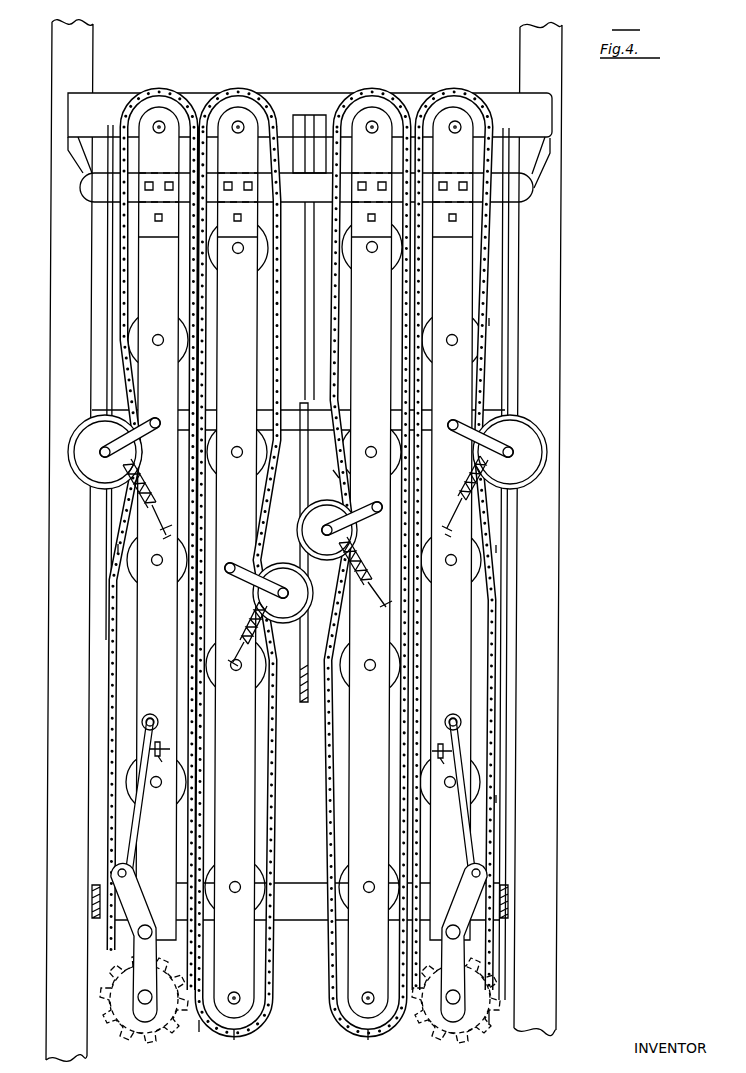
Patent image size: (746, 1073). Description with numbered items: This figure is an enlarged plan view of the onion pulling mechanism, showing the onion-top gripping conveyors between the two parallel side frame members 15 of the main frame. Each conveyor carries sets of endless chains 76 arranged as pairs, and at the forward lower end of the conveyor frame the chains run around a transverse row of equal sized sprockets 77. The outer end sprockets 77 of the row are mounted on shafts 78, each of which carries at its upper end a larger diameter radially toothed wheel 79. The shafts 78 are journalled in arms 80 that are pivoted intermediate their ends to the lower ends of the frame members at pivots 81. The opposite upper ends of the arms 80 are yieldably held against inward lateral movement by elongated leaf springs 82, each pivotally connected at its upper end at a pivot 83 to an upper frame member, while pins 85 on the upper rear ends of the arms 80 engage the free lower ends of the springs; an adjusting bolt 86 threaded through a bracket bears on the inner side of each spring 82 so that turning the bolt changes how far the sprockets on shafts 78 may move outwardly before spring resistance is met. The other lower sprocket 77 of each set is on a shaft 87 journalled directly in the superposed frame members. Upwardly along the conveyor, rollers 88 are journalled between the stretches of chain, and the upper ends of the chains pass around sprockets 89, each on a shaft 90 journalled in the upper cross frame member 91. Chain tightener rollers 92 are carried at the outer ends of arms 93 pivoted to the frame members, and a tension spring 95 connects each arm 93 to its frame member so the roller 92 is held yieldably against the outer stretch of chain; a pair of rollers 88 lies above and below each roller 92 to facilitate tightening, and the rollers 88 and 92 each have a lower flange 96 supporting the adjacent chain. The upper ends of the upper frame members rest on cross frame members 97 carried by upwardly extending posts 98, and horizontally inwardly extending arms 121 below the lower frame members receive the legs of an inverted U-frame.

The side frame members 15 is at (54, 298).
The endless chains 76 is at (336, 727).
The sprockets 77 is at (357, 1041).
The shafts 78 is at (145, 1004).
The radially toothed wheel 79 is at (168, 1036).
The arms 80 is at (139, 900).
The pivots 81 is at (151, 928).
The leaf springs 82 is at (490, 842).
The pivots 83 is at (150, 714).
The pins 85 is at (118, 875).
The adjusting bolt 86 is at (158, 746).
The shaft 87 is at (238, 1003).
The rollers 88 is at (492, 322).
The sprockets 89 is at (462, 95).
The shaft 90 is at (461, 127).
The upper cross frame member 91 is at (330, 108).
The chain tightener rollers 92 is at (536, 427).
The arms 93 is at (465, 440).
The tension spring 95 is at (466, 468).
The lower flange 96 is at (70, 460).
The cross frame members 97 is at (115, 197).
The posts 98 is at (299, 165).
The arms 121 is at (100, 916).